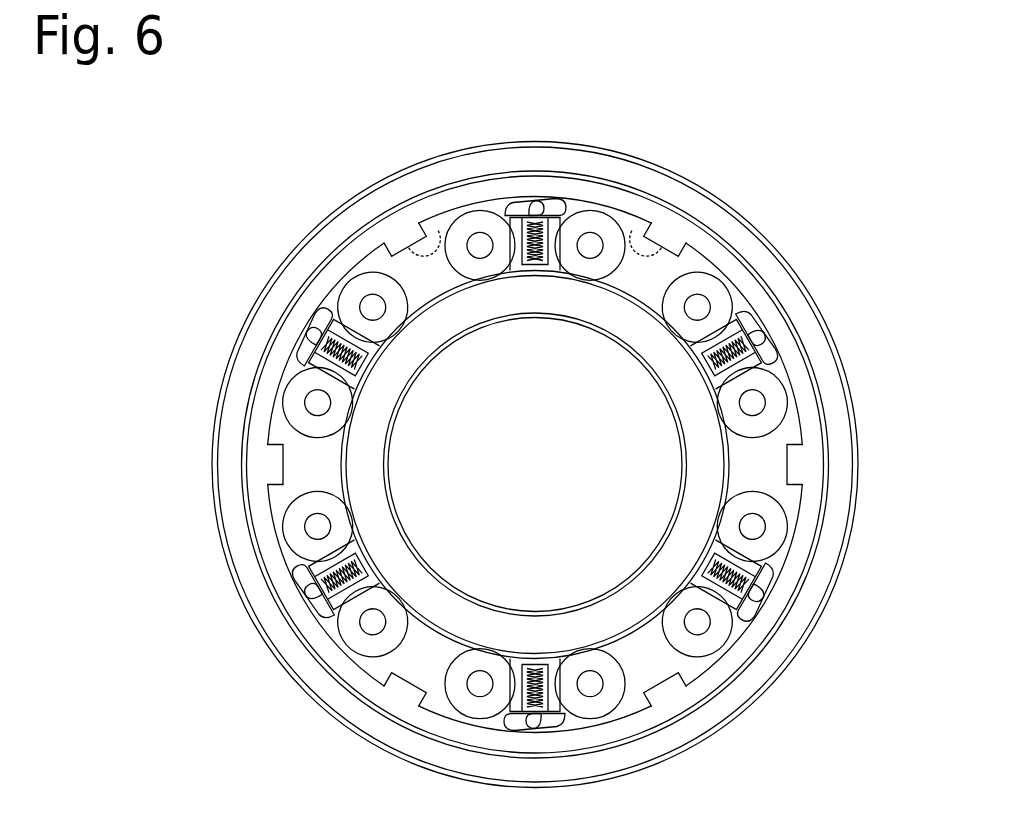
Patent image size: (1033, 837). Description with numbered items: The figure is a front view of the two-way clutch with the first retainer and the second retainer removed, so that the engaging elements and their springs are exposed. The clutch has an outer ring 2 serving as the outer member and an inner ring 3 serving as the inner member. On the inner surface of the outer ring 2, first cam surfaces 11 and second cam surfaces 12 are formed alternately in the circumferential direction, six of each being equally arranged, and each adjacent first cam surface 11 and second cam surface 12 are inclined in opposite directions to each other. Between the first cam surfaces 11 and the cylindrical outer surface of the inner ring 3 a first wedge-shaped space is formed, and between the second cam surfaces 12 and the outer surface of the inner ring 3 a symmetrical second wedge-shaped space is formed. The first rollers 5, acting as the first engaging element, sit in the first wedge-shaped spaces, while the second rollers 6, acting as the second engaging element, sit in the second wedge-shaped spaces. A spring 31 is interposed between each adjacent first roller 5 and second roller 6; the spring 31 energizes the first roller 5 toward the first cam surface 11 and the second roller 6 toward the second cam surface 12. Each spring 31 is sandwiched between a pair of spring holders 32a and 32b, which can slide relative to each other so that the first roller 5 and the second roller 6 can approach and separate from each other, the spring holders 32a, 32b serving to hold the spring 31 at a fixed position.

The outer ring 2 is at (665, 185).
The inner ring 3 is at (463, 316).
The first roller 5 is at (474, 224).
The second roller 6 is at (610, 240).
The first cam surface 11 is at (418, 248).
The second cam surface 12 is at (663, 252).
The spring 31 is at (537, 238).
The spring holder 32a is at (521, 232).
The spring holder 32b is at (562, 222).